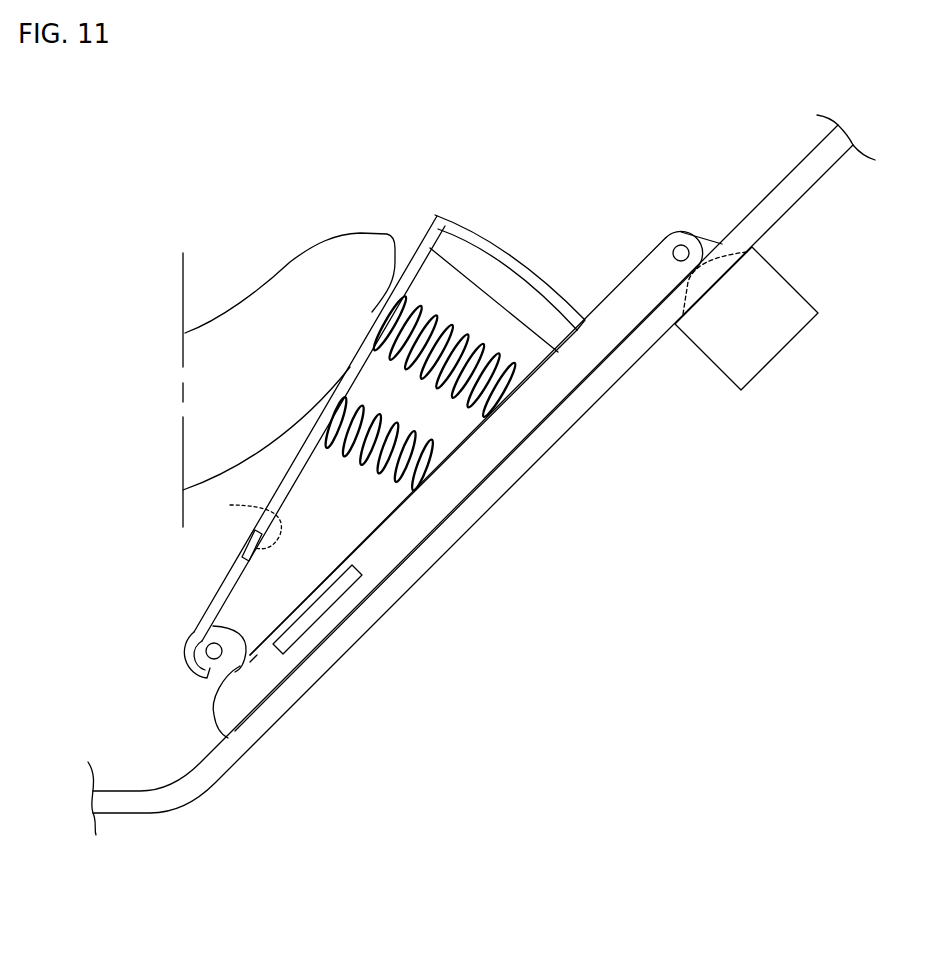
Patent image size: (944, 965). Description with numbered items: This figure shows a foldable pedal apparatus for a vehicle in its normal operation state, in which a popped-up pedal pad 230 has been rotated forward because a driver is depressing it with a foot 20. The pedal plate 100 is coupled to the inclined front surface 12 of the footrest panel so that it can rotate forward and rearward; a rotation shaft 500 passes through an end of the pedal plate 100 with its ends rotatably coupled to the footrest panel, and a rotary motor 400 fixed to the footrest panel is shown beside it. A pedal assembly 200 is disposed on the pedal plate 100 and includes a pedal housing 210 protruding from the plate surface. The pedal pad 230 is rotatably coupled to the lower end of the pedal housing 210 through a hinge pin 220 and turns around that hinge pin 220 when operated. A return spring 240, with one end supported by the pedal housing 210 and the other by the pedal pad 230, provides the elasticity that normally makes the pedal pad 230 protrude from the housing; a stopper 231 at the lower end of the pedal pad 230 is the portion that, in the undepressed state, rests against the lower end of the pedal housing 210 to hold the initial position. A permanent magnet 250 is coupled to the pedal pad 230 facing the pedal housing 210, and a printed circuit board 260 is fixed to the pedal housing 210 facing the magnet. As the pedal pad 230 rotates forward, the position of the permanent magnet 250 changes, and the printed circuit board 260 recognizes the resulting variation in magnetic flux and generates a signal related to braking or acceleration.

The inclined front surface 12 is at (808, 172).
The foot 20 is at (346, 258).
The pedal plate 100 is at (440, 497).
The pedal assembly 200 is at (208, 584).
The pedal housing 210 is at (493, 276).
The hinge pin 220 is at (197, 634).
The pedal pad 230 is at (432, 228).
The stopper 231 is at (205, 677).
The return spring 240 is at (428, 462).
The permanent magnet 250 is at (283, 520).
The printed circuit board 260 is at (318, 610).
The rotary motor 400 is at (773, 337).
The rotation shaft 500 is at (681, 246).